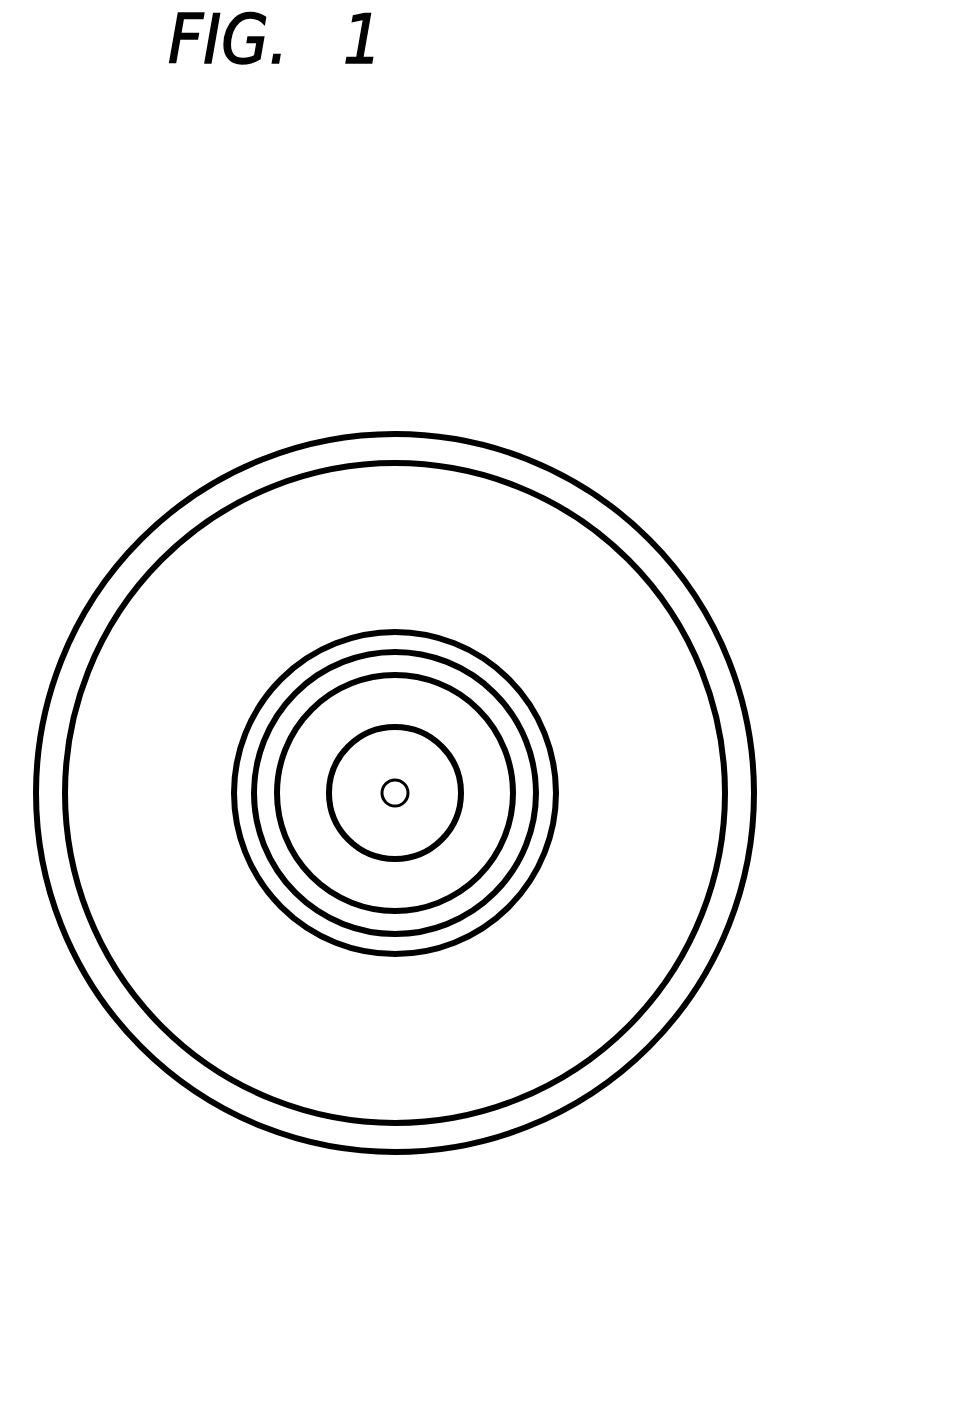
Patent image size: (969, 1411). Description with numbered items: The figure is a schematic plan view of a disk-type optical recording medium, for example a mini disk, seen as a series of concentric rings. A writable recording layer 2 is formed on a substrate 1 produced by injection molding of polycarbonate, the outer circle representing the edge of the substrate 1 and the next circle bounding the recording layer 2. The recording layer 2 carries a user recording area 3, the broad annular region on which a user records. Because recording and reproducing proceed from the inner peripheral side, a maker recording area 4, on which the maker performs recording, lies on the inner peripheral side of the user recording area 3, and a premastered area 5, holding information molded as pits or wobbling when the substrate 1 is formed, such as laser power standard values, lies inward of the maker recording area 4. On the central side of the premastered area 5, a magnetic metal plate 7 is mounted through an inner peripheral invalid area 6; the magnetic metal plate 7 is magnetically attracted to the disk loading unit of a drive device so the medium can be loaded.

The substrate 1 is at (385, 1155).
The writable recording layer 2 is at (618, 1038).
The user recording area 3 is at (638, 893).
The maker recording area 4 is at (545, 799).
The premastered area 5 is at (520, 748).
The inner peripheral invalid area 6 is at (443, 727).
The magnetic metal plate 7 is at (398, 748).